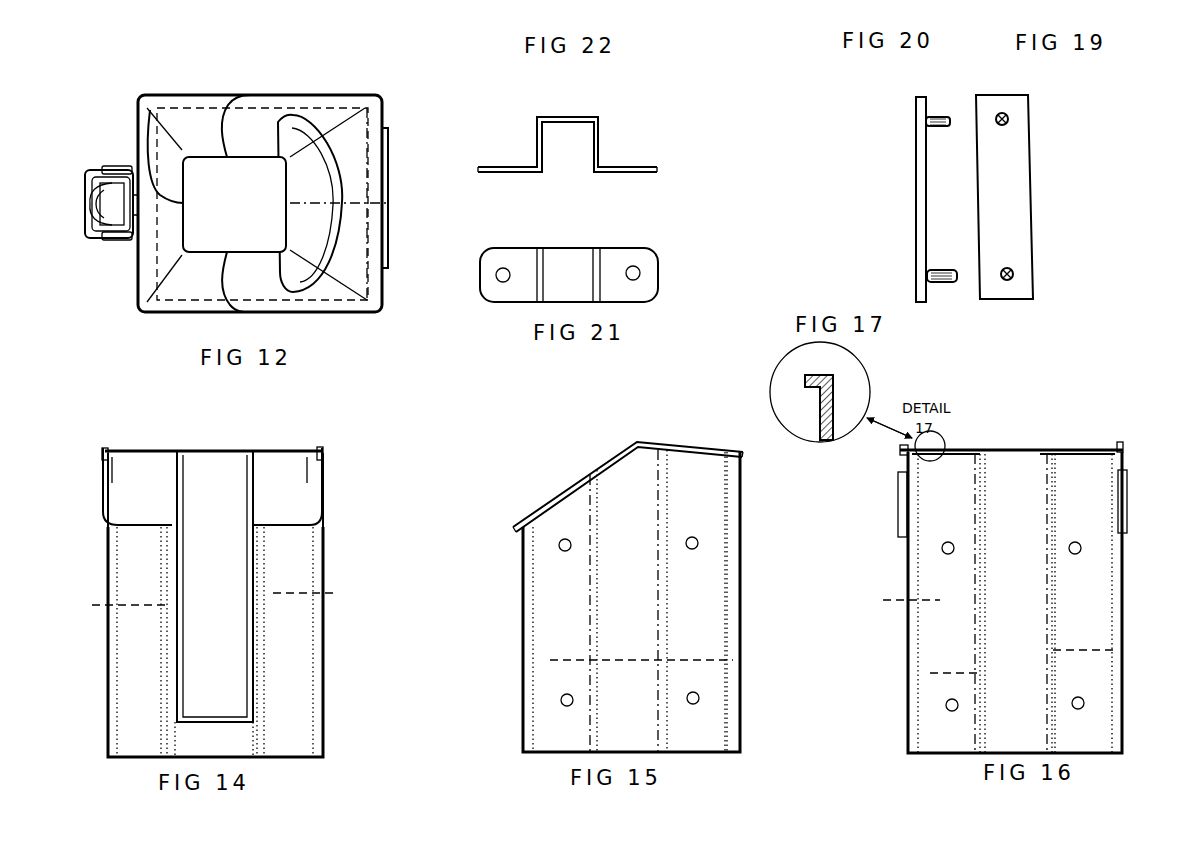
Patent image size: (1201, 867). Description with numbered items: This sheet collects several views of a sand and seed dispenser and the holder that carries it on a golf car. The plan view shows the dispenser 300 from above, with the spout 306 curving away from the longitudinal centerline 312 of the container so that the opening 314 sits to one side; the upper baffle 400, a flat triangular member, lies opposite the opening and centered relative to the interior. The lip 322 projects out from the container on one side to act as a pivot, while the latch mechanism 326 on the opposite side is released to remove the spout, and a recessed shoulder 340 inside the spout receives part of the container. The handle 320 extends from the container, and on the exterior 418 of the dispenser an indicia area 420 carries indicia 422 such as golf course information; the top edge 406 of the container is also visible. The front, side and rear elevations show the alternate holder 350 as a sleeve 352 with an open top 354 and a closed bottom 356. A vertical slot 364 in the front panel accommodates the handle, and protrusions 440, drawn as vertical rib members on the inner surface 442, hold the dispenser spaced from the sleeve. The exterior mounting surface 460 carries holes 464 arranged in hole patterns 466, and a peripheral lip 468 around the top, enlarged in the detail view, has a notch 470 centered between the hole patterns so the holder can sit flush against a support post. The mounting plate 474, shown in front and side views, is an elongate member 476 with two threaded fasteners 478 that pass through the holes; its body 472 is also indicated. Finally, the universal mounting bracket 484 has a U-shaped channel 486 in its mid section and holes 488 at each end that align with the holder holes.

In FIG. 12, the container assembly 300 is at (397, 308).
In FIG. 12, the spout 306 is at (343, 312).
In FIG. 12, the longitudinal centerline 312 is at (277, 205).
In FIG. 12, the opening 314 is at (147, 108).
In FIG. 12, the handle 320 is at (100, 240).
In FIG. 12, the lip 322 is at (387, 158).
In FIG. 12, the latch mechanism 326 is at (98, 167).
In FIG. 12, the recessed shoulder 340 is at (187, 302).
In FIG. 14, the holder 350 is at (340, 688).
In FIG. 15, the holder 350 is at (533, 465).
In FIG. 16, the holder 350 is at (1079, 396).
In FIG. 14, the sleeve 352 is at (125, 645).
In FIG. 15, the sleeve 352 is at (522, 603).
In FIG. 16, the sleeve 352 is at (907, 558).
In FIG. 14, the open top 354 is at (120, 447).
In FIG. 15, the open top 354 is at (713, 442).
In FIG. 16, the open top 354 is at (967, 445).
In FIG. 14, the closed bottom 356 is at (303, 757).
In FIG. 15, the closed bottom 356 is at (720, 752).
In FIG. 16, the closed bottom 356 is at (1083, 753).
In FIG. 14, the vertical slot 364 is at (255, 638).
In FIG. 12, the upper baffle 400 is at (388, 250).
In FIG. 12, the top edge 406 is at (385, 103).
In FIG. 12, the exterior 418 is at (237, 92).
In FIG. 12, the indicia area 420 is at (273, 110).
In FIG. 12, the indicia 422 is at (307, 130).
In FIG. 14, the protrusions 440 is at (193, 470).
In FIG. 15, the protrusions 440 is at (520, 690).
In FIG. 16, the protrusions 440 is at (903, 653).
In FIG. 14, the inner surface 442 is at (277, 475).
In FIG. 15, the inner surface 442 is at (507, 552).
In FIG. 16, the inner surface 442 is at (894, 597).
In FIG. 15, the exterior mounting surface 460 is at (640, 625).
In FIG. 16, the exterior mounting surface 460 is at (1030, 618).
In FIG. 15, the holes 464 is at (690, 538).
In FIG. 16, the holes 464 is at (1073, 542).
In FIG. 15, the hole patterns 466 is at (565, 512).
In FIG. 16, the hole patterns 466 is at (951, 480).
In FIG. 17, the peripheral lip 468 is at (828, 373).
In FIG. 14, the peripheral lip 468 is at (110, 517).
In FIG. 15, the peripheral lip 468 is at (742, 455).
In FIG. 16, the peripheral lip 468 is at (1123, 442).
In FIG. 14, the notch 470 is at (102, 470).
In FIG. 15, the notch 470 is at (625, 442).
In FIG. 16, the notch 470 is at (900, 463).
In FIG. 19, the mounting plate 472 is at (1033, 180).
In FIG. 20, the mounting plate 474 is at (892, 128).
In FIG. 19, the mounting plate 474 is at (1058, 95).
In FIG. 20, the elongate member 476 is at (917, 208).
In FIG. 20, the threaded fasteners 478 is at (943, 130).
In FIG. 19, the threaded fasteners 478 is at (1008, 119).
In FIG. 22, the universal mounting bracket 484 is at (627, 118).
In FIG. 21, the universal mounting bracket 484 is at (662, 307).
In FIG. 22, the U-shaped channel 486 is at (567, 125).
In FIG. 21, the U-shaped channel 486 is at (567, 268).
In FIG. 22, the holes 488 is at (503, 163).
In FIG. 21, the holes 488 is at (500, 272).